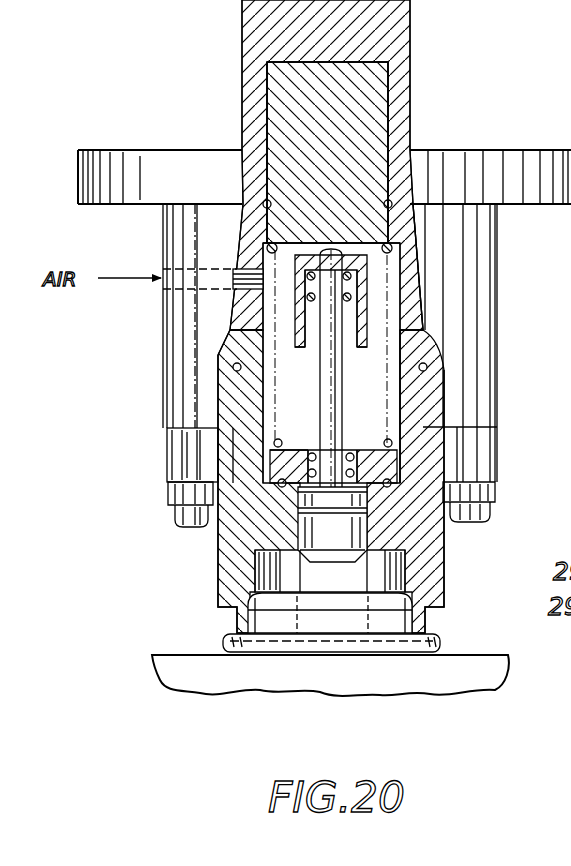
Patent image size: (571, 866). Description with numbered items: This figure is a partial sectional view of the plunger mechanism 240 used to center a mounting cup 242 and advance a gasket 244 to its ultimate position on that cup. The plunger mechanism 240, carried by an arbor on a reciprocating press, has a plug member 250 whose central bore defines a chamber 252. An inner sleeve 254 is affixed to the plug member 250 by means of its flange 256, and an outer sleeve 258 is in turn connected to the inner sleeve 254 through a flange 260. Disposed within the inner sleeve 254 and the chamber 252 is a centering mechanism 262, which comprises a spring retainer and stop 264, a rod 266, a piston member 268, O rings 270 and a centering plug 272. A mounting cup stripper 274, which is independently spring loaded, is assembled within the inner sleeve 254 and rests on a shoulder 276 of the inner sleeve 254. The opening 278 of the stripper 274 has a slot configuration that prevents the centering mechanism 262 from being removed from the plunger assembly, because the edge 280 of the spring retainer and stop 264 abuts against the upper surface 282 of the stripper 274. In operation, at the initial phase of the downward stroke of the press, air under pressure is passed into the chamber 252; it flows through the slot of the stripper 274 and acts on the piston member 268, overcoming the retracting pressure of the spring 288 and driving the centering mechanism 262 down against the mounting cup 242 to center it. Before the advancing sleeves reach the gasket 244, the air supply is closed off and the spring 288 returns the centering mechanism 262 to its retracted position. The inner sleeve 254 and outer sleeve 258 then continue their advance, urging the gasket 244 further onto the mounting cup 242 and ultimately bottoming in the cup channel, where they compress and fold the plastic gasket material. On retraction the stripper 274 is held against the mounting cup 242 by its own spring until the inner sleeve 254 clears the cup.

The plunger mechanism 240 is at (136, 365).
The mounting cup 242 is at (233, 648).
The gasket 244 is at (258, 622).
The plug member 250 is at (356, 148).
The chamber 252 is at (388, 260).
The inner sleeve 254 is at (248, 528).
The flange 256 is at (182, 400).
The outer sleeve 258 is at (230, 563).
The flange 260 is at (185, 455).
The centering mechanism 262 is at (370, 309).
The spring retainer and stop 264 is at (367, 283).
The rod 266 is at (337, 372).
The piston member 268 is at (295, 510).
The O rings 270 is at (348, 525).
The centering plug 272 is at (385, 532).
The mounting cup stripper 274 is at (368, 498).
The shoulder 276 is at (390, 445).
The opening 278 is at (348, 458).
The edge 280 is at (303, 352).
The upper surface 282 is at (292, 450).
The spring 288 is at (350, 392).